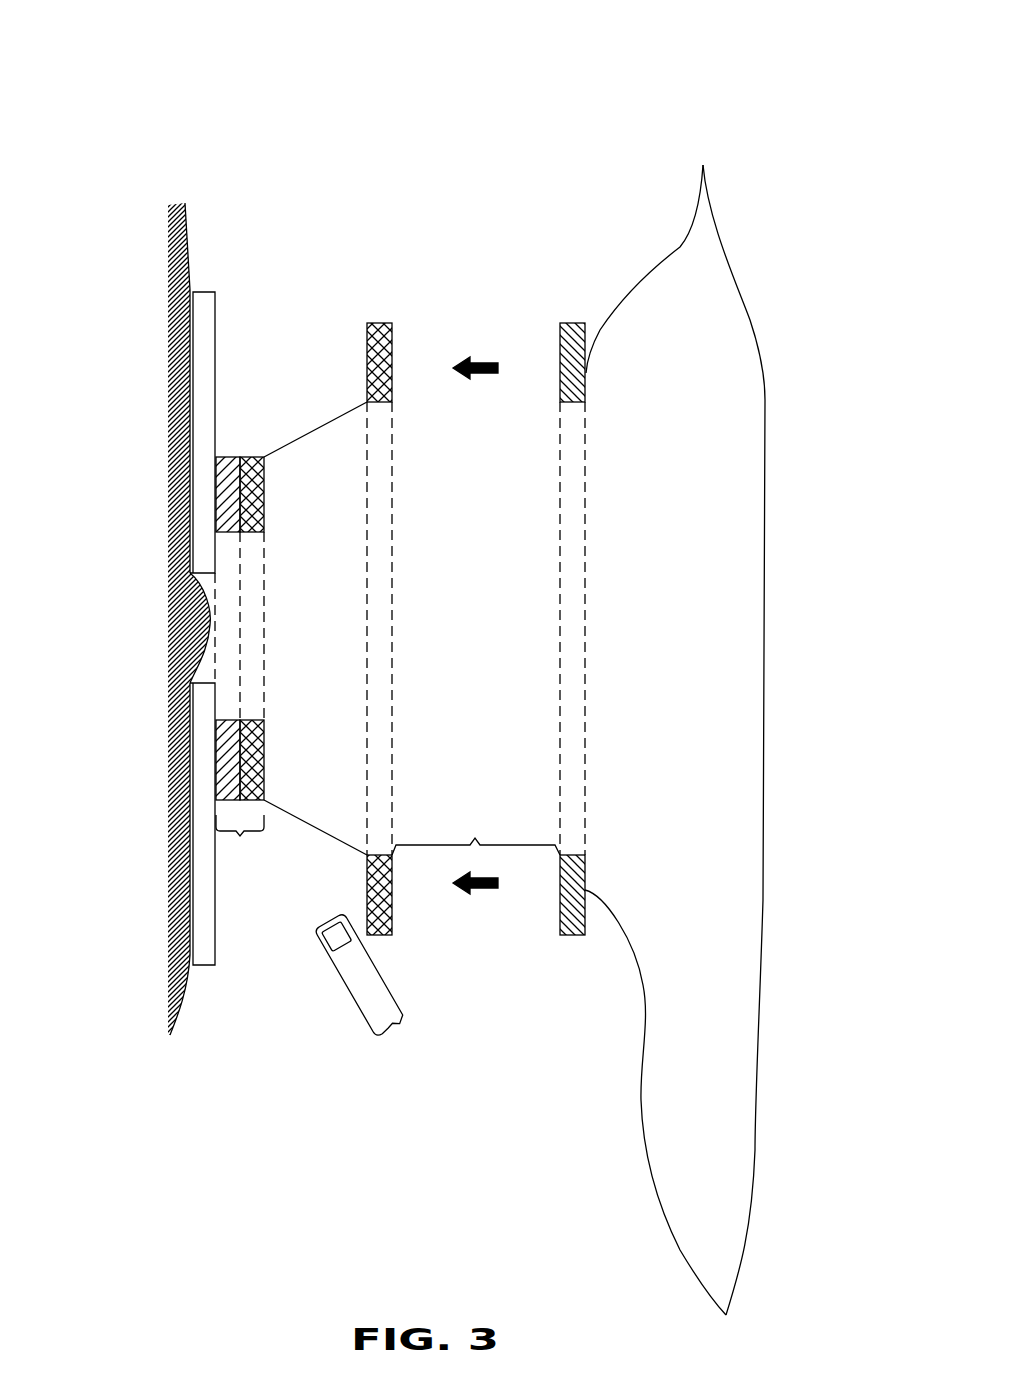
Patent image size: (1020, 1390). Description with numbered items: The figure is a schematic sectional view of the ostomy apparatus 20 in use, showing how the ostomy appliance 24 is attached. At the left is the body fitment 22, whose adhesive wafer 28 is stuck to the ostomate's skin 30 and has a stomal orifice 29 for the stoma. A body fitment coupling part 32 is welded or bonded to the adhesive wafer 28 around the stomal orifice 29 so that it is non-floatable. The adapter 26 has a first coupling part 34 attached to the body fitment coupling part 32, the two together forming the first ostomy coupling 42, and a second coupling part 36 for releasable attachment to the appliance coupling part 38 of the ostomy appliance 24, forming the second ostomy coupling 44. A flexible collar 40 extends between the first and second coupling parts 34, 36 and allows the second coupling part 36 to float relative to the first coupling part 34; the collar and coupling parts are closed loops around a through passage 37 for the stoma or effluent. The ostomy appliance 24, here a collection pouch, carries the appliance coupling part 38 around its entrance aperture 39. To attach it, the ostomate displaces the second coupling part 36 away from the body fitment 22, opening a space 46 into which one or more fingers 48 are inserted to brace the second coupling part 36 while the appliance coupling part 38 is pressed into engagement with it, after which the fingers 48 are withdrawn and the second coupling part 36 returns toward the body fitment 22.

The ostomy apparatus 20 is at (457, 82).
The body fitment 22 is at (233, 270).
The ostomy appliance 24 is at (632, 225).
The adapter 26 is at (335, 340).
The adhesive wafer 28 is at (207, 948).
The stomal orifice 29 is at (207, 668).
The ostomate's skin 30 is at (185, 1003).
The body fitment coupling part 32 is at (228, 457).
The first coupling part 34 is at (252, 457).
The second coupling part 36 is at (392, 343).
The through passage 37 is at (340, 583).
The appliance coupling part 38 is at (560, 343).
The entrance aperture 39 is at (573, 467).
The flexible collar 40 is at (318, 430).
The first ostomy coupling 42 is at (240, 845).
The second ostomy coupling 44 is at (476, 825).
The space 46 is at (245, 898).
The finger 48 is at (370, 996).